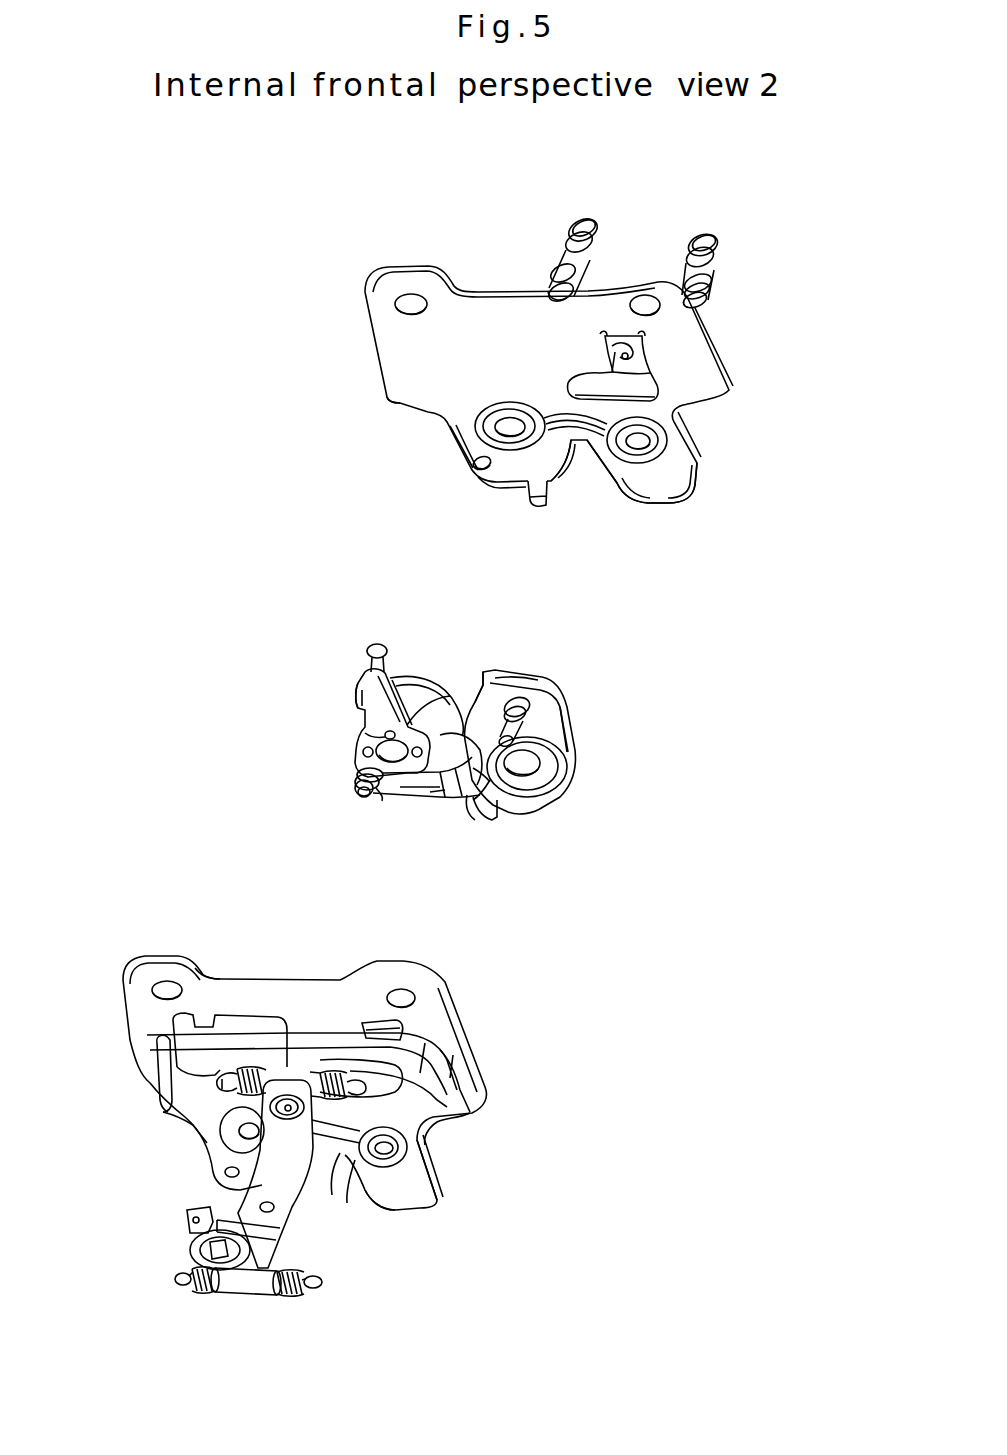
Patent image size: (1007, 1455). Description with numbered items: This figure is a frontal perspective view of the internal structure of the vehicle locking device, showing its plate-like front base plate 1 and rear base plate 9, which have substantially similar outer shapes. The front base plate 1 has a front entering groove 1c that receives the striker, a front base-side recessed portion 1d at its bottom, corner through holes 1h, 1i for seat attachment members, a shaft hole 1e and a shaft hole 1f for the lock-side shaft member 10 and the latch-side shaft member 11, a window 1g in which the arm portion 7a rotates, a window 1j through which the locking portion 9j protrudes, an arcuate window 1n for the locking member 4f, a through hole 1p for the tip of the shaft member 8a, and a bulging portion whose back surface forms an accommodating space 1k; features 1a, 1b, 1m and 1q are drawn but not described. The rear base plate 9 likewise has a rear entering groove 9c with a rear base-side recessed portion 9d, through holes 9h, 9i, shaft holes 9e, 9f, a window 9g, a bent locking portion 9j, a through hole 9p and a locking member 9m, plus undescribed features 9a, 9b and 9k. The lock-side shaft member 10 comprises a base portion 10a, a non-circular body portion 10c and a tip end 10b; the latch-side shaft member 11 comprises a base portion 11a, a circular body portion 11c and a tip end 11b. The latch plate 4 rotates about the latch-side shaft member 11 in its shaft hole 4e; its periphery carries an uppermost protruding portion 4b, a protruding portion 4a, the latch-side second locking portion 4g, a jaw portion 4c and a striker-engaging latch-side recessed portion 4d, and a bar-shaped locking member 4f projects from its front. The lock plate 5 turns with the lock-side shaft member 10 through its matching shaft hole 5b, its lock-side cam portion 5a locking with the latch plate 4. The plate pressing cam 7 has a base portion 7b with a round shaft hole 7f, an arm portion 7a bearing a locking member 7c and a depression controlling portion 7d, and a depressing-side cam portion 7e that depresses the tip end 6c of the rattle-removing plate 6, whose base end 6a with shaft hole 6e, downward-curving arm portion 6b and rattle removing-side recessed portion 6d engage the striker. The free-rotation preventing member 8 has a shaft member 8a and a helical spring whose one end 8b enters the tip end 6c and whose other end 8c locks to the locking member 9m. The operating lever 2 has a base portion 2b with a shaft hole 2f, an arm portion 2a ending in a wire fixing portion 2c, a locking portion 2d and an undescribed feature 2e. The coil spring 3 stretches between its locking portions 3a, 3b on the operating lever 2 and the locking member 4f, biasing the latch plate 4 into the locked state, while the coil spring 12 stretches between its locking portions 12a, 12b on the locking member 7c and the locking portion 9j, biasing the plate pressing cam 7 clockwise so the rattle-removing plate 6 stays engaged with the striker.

The front base plate 1 is at (123, 990).
The pivot hole 1a is at (240, 1130).
The side wall 1b is at (417, 1210).
The front entering groove 1c is at (367, 1197).
The front base-side recessed portion 1d is at (340, 1155).
The shaft hole 1e is at (175, 1113).
The shaft hole 1f is at (390, 1147).
The window 1g is at (197, 983).
The through hole 1h is at (160, 988).
The through hole 1i is at (410, 997).
The window 1j is at (400, 1028).
The accommodating space 1k is at (155, 1060).
The raised portion 1m is at (222, 1053).
The window 1n is at (450, 1075).
The through hole 1p is at (228, 1172).
The edge portion 1q is at (440, 1125).
The operating lever 2 is at (183, 1215).
The arm portion 2a is at (260, 1180).
The base portion 2b is at (200, 1247).
The wire fixing portion 2c is at (312, 1087).
The locking portion 2d is at (185, 1225).
The hole 2e is at (275, 1208).
The shaft hole 2f is at (213, 1250).
The coil spring 3 is at (250, 1297).
The locking portion 3a is at (187, 1290).
The locking portion 3b is at (320, 1287).
The latch plate 4 is at (570, 720).
The protruding portion 4a is at (463, 727).
The uppermost protruding portion 4b is at (470, 750).
The jaw portion 4c is at (483, 813).
The latch-side recessed portion 4d is at (477, 793).
The shaft hole 4e is at (530, 763).
The locking member 4f is at (517, 730).
The latch-side second locking portion 4g is at (500, 690).
The lock plate 5 is at (410, 677).
The lock-side cam portion 5a is at (443, 690).
The shaft hole 5b is at (378, 745).
The rattle-removing plate 6 is at (573, 743).
The base end 6a is at (550, 793).
The arm portion 6b is at (533, 682).
The tip end 6c is at (400, 787).
The rattle removing-side recessed portion 6d is at (457, 790).
The shaft hole 6e is at (517, 780).
The plate pressing cam 7 is at (365, 683).
The arm portion 7a is at (388, 697).
The base portion 7b is at (357, 751).
The locking member 7c is at (370, 647).
The depression controlling portion 7d is at (350, 700).
The depressing-side cam portion 7e is at (417, 793).
The shaft hole 7f is at (363, 725).
The free-rotation preventing member 8 is at (357, 768).
The shaft member 8a is at (355, 797).
The one end of the helical spring 8b is at (385, 795).
The other end of the helical spring 8c is at (437, 797).
The rear base plate 9 is at (368, 347).
The bent flange 9a is at (450, 443).
The right lobe 9b is at (673, 497).
The rear entering groove 9c is at (620, 500).
The rear base-side recessed portion 9d is at (585, 447).
The shaft hole 9e is at (503, 425).
The shaft hole 9f is at (640, 438).
The window 9g is at (647, 385).
The through hole 9h is at (408, 300).
The through hole 9i is at (646, 298).
The locking portion 9j is at (640, 352).
The lower edge 9k is at (503, 467).
The locking member 9m is at (528, 507).
The through hole 9p is at (480, 467).
The lock-side shaft member 10 is at (561, 214).
The base portion 10a is at (573, 223).
The tip end 10b is at (535, 278).
The body portion 10c is at (547, 257).
The latch-side shaft member 11 is at (728, 248).
The base portion 11a is at (708, 235).
The tip end 11b is at (705, 305).
The body portion 11c is at (722, 282).
The coil spring 12 is at (300, 1068).
The locking portion 12a is at (257, 1077).
The locking portion 12b is at (360, 1085).